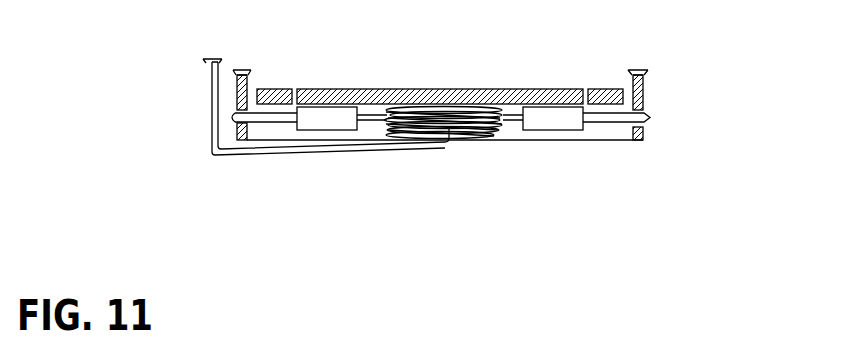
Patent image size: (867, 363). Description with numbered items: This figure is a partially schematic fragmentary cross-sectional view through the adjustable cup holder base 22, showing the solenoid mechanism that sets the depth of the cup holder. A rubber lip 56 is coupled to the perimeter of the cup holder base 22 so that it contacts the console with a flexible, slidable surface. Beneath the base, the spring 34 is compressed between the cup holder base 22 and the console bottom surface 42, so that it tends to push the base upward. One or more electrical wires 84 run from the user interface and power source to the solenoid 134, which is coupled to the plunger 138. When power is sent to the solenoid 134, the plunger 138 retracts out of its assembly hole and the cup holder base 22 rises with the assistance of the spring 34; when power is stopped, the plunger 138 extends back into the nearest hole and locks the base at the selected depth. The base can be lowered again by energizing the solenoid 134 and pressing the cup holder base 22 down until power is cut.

The electrical wires 84 is at (213, 88).
The cup holder base 22 is at (406, 88).
The spring 34 is at (512, 89).
The solenoid 134 is at (550, 117).
The rubber lip 56 is at (623, 105).
The plunger 138 is at (650, 118).
The console bottom surface 42 is at (595, 138).